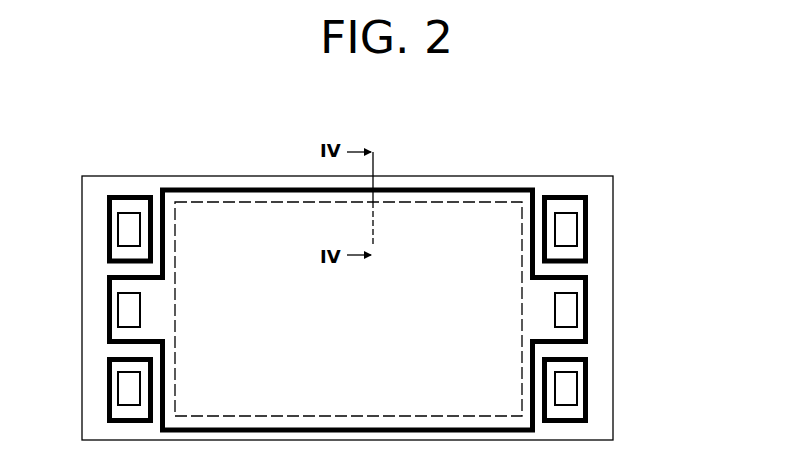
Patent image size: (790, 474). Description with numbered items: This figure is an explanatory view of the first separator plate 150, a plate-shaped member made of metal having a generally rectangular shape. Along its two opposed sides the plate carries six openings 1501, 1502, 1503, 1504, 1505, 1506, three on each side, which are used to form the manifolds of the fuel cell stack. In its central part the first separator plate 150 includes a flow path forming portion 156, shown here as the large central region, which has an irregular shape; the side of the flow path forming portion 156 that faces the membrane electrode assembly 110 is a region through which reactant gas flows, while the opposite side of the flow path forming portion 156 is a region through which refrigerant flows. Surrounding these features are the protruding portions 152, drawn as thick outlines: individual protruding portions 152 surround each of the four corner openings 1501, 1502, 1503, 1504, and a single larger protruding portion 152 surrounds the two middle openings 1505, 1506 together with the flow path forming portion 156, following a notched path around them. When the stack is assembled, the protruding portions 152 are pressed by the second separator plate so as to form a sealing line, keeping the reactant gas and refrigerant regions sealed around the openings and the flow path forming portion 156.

The membrane electrode assembly 110 is at (206, 202).
The first separator plate 150 is at (598, 176).
The protruding portion 152 is at (495, 188).
The flow path forming portion 156 is at (366, 327).
The opening 1501 is at (118, 226).
The opening 1502 is at (577, 395).
The opening 1503 is at (118, 390).
The opening 1504 is at (577, 233).
The opening 1505 is at (118, 313).
The opening 1506 is at (577, 320).